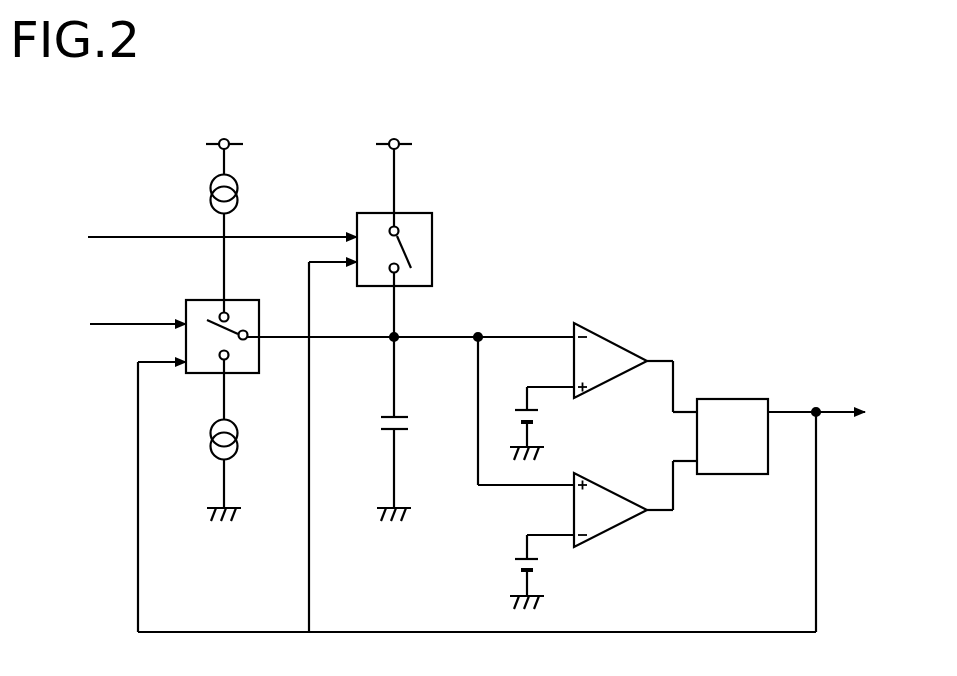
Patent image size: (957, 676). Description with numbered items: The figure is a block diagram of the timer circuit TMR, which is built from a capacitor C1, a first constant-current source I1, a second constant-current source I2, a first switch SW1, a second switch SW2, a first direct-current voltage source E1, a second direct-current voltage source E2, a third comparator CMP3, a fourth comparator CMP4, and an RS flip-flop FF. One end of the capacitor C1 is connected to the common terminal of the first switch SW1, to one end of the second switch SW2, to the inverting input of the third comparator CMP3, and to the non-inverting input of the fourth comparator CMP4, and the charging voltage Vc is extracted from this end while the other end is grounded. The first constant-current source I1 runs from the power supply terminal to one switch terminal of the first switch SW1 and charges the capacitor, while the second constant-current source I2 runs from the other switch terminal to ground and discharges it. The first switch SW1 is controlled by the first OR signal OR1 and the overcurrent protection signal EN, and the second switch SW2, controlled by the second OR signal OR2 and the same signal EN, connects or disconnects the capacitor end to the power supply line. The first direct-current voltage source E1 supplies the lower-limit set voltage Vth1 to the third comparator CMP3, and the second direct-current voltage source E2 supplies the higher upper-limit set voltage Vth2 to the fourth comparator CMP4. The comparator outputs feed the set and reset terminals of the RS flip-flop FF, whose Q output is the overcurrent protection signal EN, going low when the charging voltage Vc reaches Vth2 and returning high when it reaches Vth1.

The timer circuit TMR is at (772, 189).
The first constant-current source I1 is at (212, 193).
The second constant-current source I2 is at (210, 439).
The first switch SW1 is at (256, 299).
The second switch SW2 is at (430, 200).
The first OR signal OR1 is at (105, 323).
The second OR signal OR2 is at (190, 237).
The charging voltage Vc is at (400, 331).
The capacitor C1 is at (380, 422).
The third comparator CMP3 is at (623, 326).
The fourth comparator CMP4 is at (623, 476).
The lower-limit set voltage Vth1 is at (538, 381).
The upper-limit set voltage Vth2 is at (537, 531).
The first direct-current voltage source E1 is at (538, 417).
The second direct-current voltage source E2 is at (538, 566).
The RS flip-flop FF is at (733, 398).
The overcurrent protection signal EN is at (837, 417).